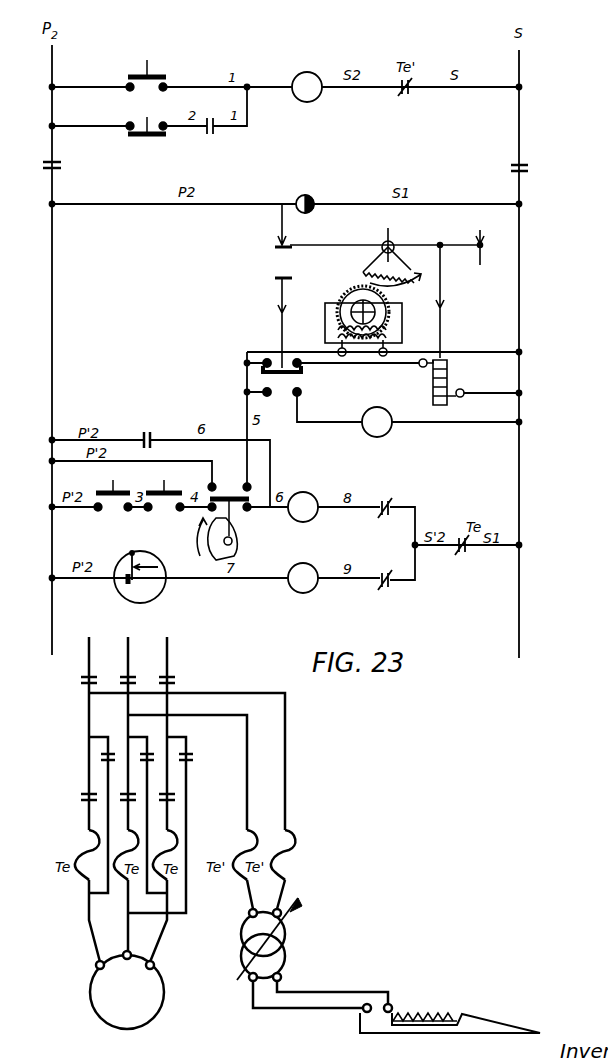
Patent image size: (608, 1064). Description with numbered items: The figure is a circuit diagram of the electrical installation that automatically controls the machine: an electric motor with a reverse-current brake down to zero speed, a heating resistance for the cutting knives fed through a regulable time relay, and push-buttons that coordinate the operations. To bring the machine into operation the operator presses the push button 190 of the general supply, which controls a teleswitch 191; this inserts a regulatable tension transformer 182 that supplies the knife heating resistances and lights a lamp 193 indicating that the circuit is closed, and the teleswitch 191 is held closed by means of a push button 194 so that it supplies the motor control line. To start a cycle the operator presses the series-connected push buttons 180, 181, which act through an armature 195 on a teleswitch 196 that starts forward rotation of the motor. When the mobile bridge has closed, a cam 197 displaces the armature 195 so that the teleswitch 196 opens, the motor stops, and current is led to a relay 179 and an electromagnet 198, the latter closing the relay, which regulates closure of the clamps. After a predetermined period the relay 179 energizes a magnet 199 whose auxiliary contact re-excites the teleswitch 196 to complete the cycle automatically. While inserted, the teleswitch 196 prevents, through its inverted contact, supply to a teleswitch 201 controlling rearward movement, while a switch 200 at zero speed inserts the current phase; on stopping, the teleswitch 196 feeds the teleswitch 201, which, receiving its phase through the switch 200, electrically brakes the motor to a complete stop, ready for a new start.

The relay 179 is at (379, 286).
The push button 180 is at (113, 503).
The push button 181 is at (164, 503).
The regulatable tension transformer 182 is at (388, 965).
The push button of the general supply 190 is at (146, 65).
The teleswitch 191 is at (285, 377).
The lamp 193 is at (302, 196).
The push button 194 is at (146, 139).
The armature 195 is at (229, 503).
The teleswitch 196 is at (137, 803).
The cam 197 is at (233, 539).
The electromagnet 198 is at (453, 382).
The magnet 199 is at (262, 427).
The switch at the zero speed 200 is at (140, 577).
The teleswitch 201 is at (78, 752).